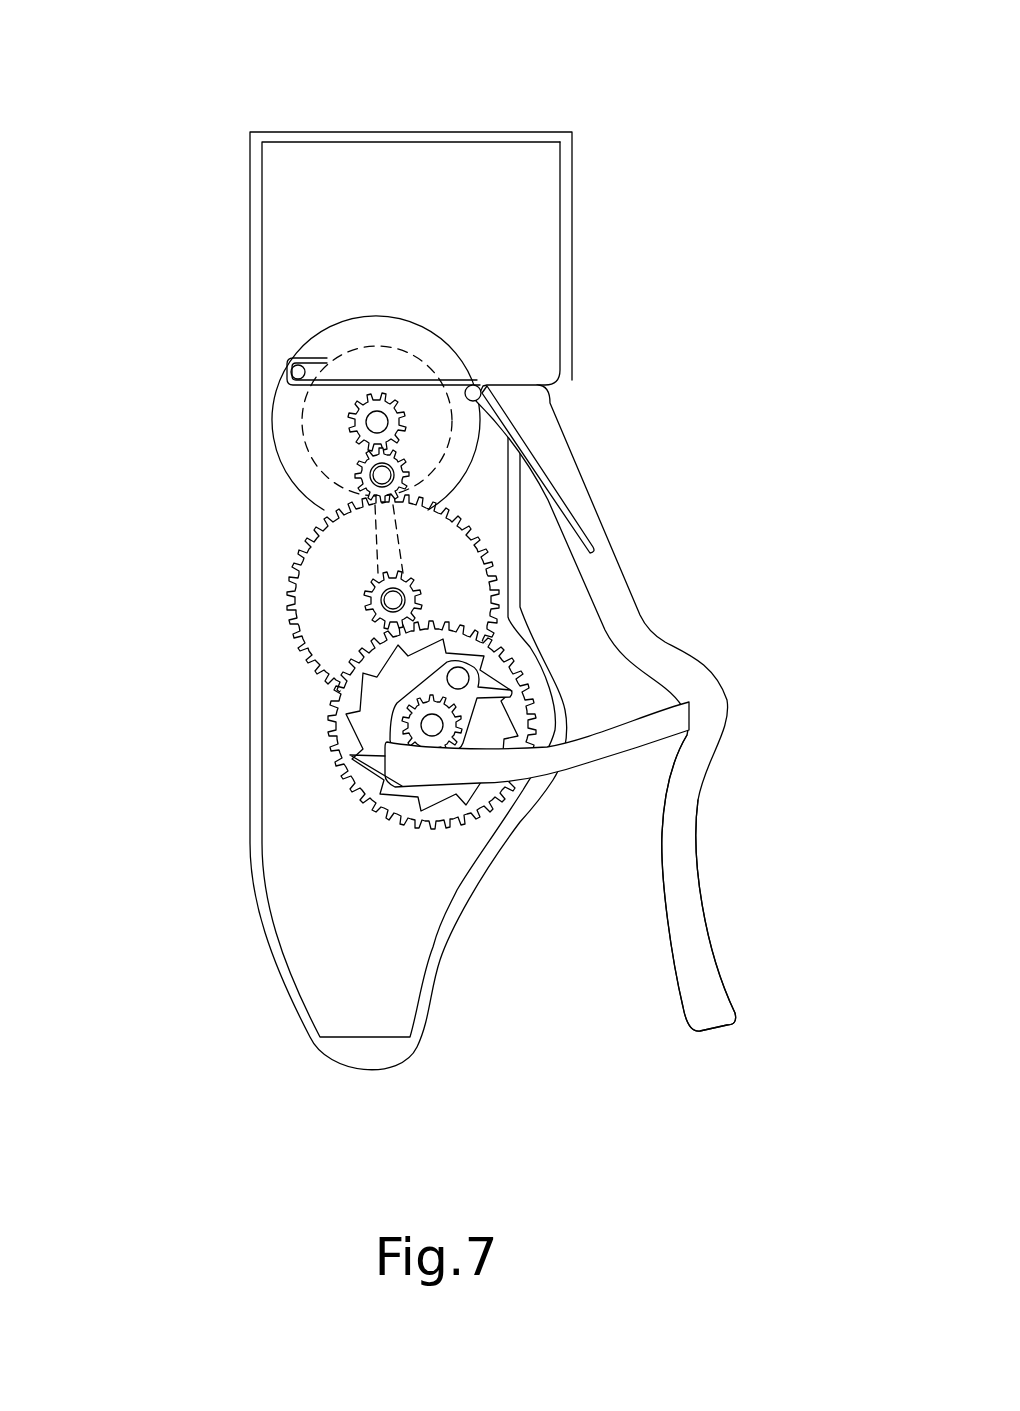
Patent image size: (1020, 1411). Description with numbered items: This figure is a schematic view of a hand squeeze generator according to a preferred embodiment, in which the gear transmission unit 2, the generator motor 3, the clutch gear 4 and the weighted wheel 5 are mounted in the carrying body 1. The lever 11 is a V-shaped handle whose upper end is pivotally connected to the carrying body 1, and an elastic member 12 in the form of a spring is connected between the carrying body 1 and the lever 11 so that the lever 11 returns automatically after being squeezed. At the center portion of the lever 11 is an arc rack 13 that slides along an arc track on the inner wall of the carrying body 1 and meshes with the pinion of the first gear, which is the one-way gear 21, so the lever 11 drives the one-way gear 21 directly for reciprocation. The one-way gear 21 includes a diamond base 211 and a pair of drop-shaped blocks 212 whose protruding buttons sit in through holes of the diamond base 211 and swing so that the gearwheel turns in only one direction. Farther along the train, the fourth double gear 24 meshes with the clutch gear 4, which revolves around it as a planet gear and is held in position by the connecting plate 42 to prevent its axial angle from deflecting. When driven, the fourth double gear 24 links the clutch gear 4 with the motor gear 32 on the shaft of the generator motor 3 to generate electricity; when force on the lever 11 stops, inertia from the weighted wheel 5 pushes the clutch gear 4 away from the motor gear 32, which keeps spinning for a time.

The carrying body 1 is at (603, 90).
The gear transmission unit 2 is at (327, 885).
The generator motor 3 is at (340, 373).
The clutch gear 4 is at (353, 475).
The weighted wheel 5 is at (437, 355).
The lever 11 is at (687, 900).
The elastic member 12 is at (548, 495).
The arc rack 13 is at (605, 750).
The one-way gear 21 is at (347, 698).
The fourth double gear 24 is at (330, 640).
The motor gear 32 is at (347, 418).
The connecting plate 42 is at (383, 555).
The diamond base 211 is at (400, 729).
The drop-shaped blocks 212 is at (493, 683).